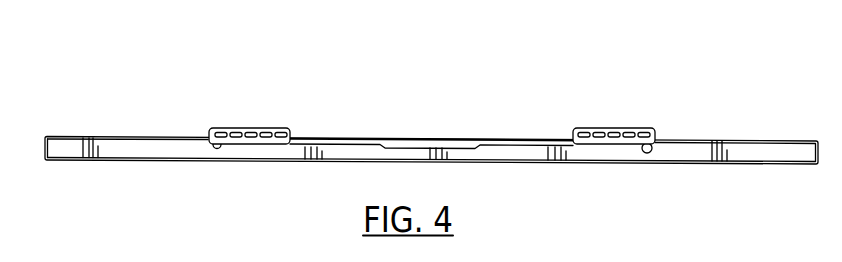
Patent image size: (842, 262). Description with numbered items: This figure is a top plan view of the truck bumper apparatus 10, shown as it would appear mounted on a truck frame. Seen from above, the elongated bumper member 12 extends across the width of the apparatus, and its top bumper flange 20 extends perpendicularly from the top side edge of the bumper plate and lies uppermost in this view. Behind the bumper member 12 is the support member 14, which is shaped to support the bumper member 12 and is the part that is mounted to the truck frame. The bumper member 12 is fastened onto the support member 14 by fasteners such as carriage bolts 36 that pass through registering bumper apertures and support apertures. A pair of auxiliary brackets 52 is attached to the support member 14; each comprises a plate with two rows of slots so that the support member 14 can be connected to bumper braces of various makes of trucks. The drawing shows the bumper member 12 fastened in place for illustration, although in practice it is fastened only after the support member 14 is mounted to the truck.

The truck bumper apparatus 10 is at (431, 133).
The bumper member 12 is at (709, 174).
The support member 14 is at (405, 132).
The top bumper flange 20 is at (122, 148).
The carriage bolt 36 is at (217, 149).
The auxiliary bracket 52 is at (282, 119).